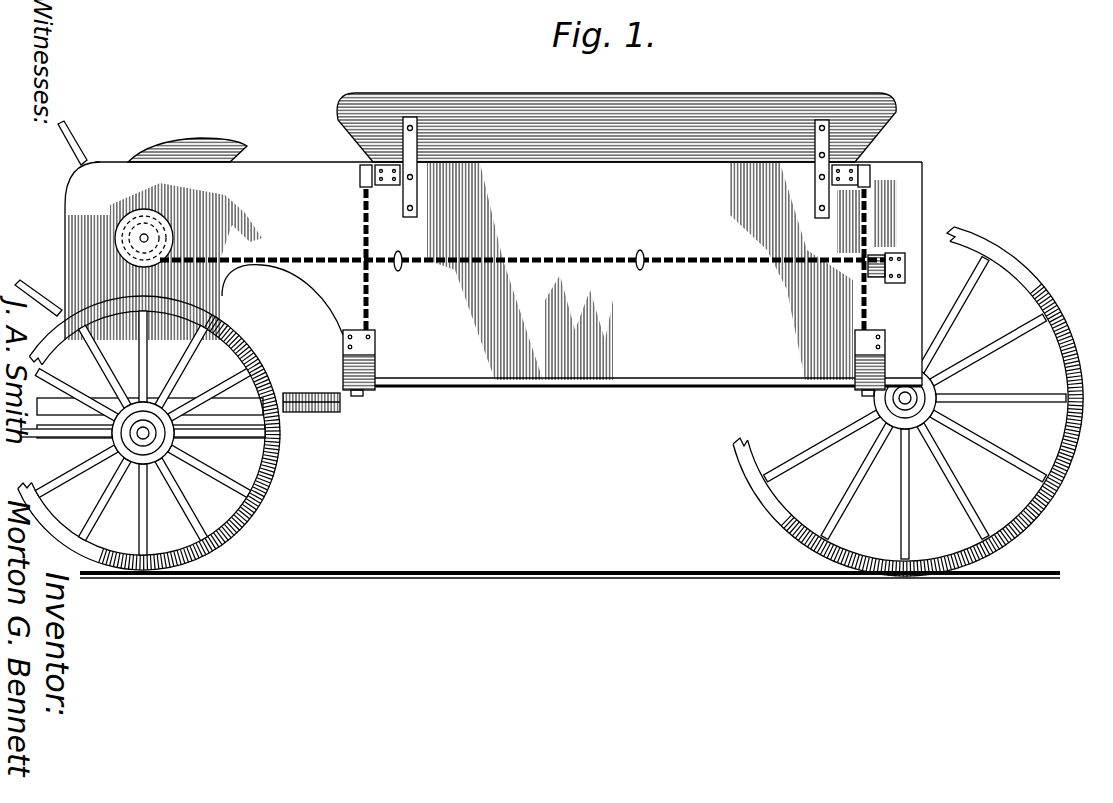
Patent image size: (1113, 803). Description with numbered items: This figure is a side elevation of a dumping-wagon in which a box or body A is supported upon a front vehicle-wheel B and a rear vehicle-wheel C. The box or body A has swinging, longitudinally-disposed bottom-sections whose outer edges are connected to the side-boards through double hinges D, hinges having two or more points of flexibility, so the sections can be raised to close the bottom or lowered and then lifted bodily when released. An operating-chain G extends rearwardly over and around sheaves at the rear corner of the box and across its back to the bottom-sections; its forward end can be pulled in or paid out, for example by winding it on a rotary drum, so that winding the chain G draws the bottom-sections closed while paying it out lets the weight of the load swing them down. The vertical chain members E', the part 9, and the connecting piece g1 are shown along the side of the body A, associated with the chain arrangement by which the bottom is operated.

The box or body A is at (562, 360).
The front vehicle-wheel B is at (272, 480).
The rear vehicle-wheel C is at (1043, 513).
The double hinge D is at (376, 350).
The vertical chains E' is at (676, 269).
The operating-chain G is at (685, 255).
The connecting plate 9 is at (882, 258).
The connecting block g1 is at (879, 280).